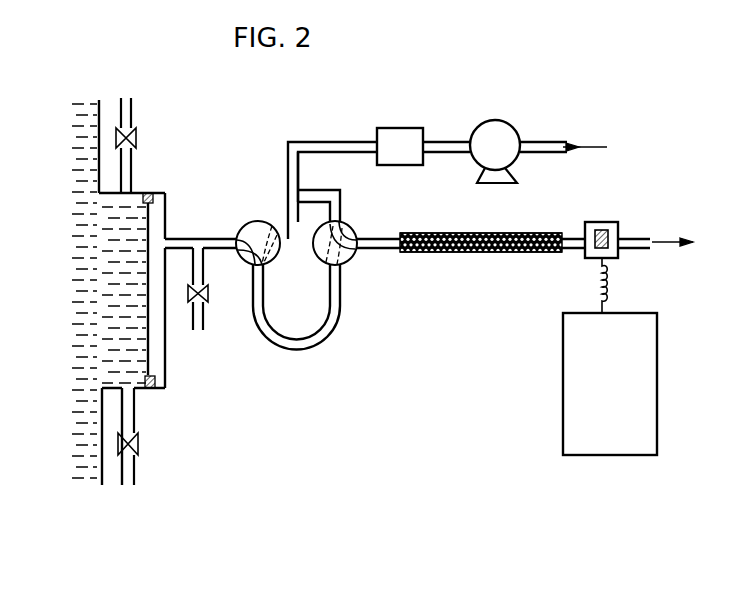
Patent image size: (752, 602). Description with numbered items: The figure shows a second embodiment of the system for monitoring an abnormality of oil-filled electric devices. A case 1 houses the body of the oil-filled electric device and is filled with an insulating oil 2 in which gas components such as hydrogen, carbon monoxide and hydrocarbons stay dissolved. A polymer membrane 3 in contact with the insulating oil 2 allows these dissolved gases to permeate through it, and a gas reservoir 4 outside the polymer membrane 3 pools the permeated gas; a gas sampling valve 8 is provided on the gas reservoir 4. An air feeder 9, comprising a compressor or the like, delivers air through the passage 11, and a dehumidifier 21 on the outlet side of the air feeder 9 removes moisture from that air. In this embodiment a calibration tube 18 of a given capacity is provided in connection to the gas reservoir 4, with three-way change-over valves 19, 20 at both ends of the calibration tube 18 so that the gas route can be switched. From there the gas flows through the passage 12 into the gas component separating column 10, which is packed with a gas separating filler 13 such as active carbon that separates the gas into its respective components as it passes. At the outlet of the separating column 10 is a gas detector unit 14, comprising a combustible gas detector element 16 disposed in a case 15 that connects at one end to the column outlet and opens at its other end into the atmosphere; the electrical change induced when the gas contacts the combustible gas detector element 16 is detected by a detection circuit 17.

The case 1 is at (101, 100).
The insulating oil 2 is at (140, 388).
The polymer membrane 3 is at (150, 350).
The gas reservoir 4 is at (163, 316).
The gas sampling valve 8 is at (204, 293).
The air feeder 9 is at (495, 121).
The gas component separating column 10 is at (427, 253).
The passage 11 is at (328, 142).
The passage 12 is at (386, 251).
The gas separating filler 13 is at (472, 253).
The gas detector unit 14 is at (584, 257).
The case 15 is at (594, 222).
The combustible gas detector element 16 is at (604, 232).
The detection circuit 17 is at (562, 357).
The calibration tube 18 is at (304, 350).
The three-way change-over valve 19 is at (256, 221).
The three-way change-over valve 20 is at (348, 226).
The dehumidifier 21 is at (383, 128).